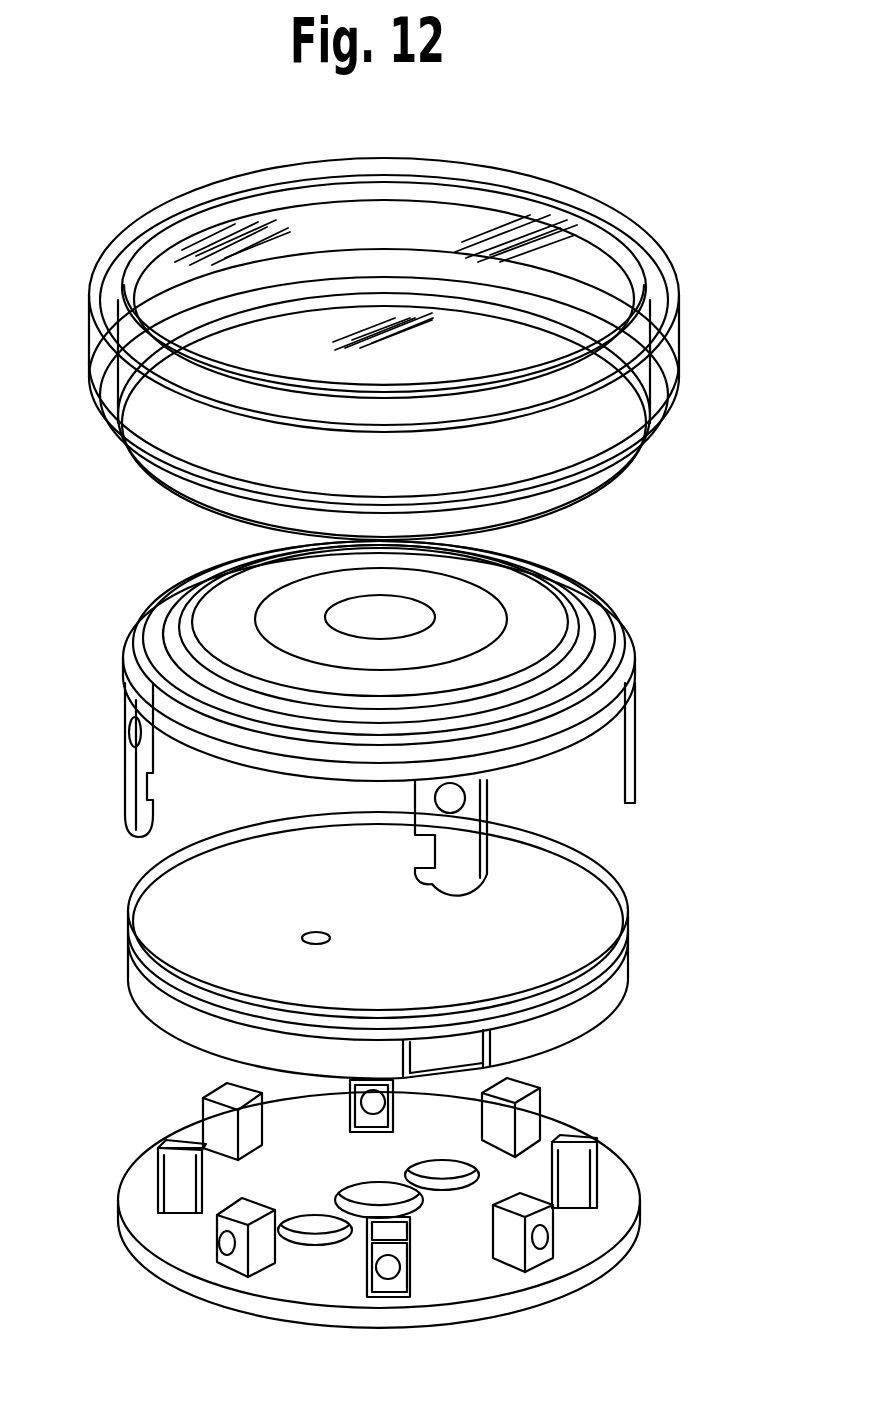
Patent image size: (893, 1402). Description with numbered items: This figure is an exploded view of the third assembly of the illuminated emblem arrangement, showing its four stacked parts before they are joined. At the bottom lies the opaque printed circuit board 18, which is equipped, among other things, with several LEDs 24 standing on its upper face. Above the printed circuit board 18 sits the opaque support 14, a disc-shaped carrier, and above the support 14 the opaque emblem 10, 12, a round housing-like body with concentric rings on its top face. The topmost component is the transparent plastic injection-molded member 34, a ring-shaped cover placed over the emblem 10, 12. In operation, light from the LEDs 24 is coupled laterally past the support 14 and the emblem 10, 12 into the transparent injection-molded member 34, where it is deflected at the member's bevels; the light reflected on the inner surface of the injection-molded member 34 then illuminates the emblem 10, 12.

The transparent plastic injection-molded member 34 is at (121, 240).
The emblem 10 is at (476, 718).
The housing 12 is at (640, 664).
The support 14 is at (192, 910).
The printed circuit board 18 is at (432, 1212).
The LEDs 24 is at (229, 1250).